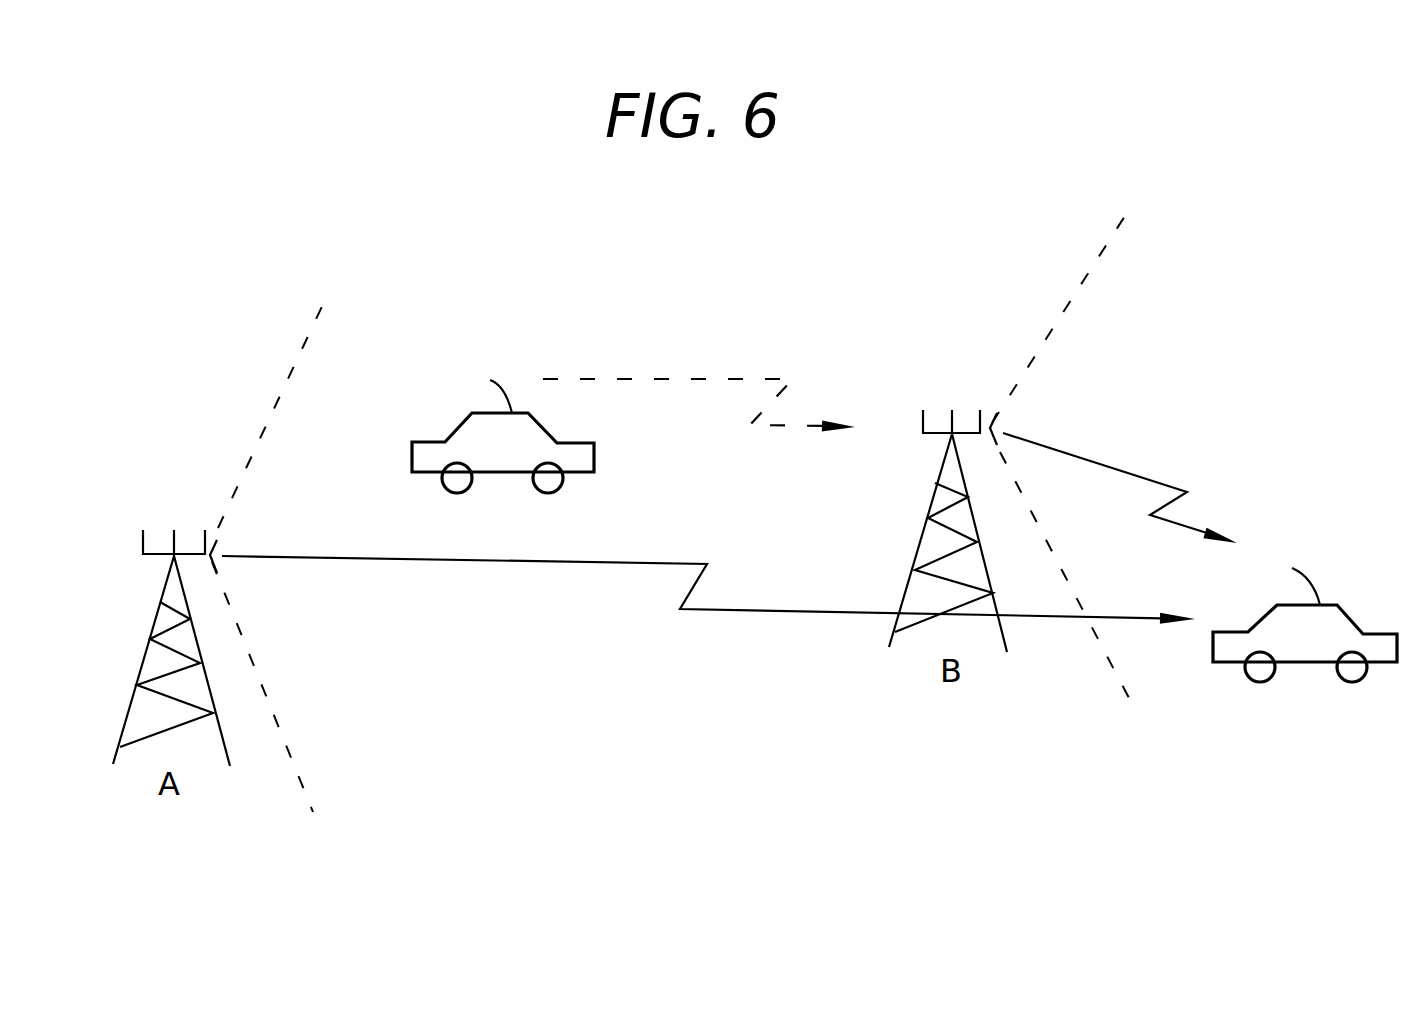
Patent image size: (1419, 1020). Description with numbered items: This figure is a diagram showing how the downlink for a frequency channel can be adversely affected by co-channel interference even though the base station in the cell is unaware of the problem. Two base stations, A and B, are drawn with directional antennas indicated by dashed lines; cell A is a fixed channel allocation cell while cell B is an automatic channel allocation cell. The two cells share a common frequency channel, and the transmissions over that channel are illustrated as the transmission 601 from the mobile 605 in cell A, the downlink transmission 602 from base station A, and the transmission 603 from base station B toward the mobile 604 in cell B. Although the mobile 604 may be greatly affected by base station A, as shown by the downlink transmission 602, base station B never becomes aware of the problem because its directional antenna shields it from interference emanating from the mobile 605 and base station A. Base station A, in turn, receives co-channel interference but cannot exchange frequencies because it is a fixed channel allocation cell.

The transmission over the common frequency channel 601 is at (656, 379).
The downlink transmission 602 is at (510, 565).
The transmission over the common frequency channel 603 is at (1107, 465).
The mobile 604 is at (1340, 605).
The mobile 605 is at (457, 427).